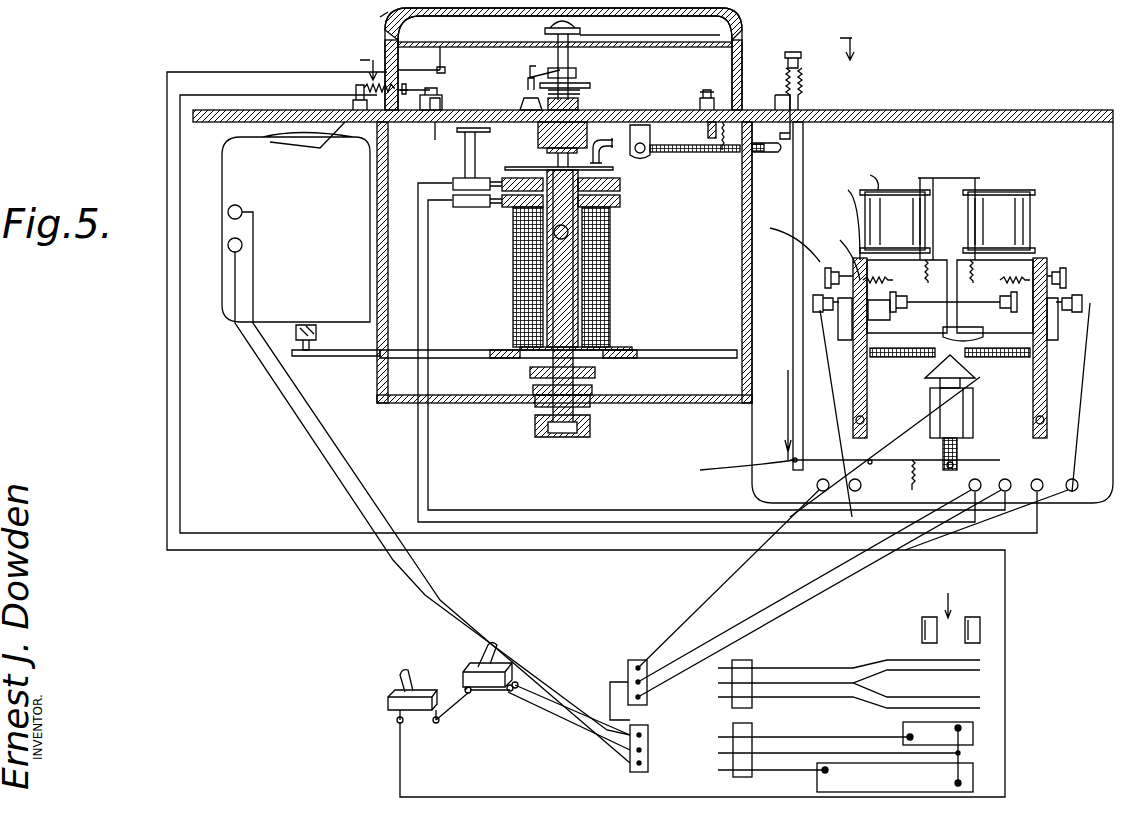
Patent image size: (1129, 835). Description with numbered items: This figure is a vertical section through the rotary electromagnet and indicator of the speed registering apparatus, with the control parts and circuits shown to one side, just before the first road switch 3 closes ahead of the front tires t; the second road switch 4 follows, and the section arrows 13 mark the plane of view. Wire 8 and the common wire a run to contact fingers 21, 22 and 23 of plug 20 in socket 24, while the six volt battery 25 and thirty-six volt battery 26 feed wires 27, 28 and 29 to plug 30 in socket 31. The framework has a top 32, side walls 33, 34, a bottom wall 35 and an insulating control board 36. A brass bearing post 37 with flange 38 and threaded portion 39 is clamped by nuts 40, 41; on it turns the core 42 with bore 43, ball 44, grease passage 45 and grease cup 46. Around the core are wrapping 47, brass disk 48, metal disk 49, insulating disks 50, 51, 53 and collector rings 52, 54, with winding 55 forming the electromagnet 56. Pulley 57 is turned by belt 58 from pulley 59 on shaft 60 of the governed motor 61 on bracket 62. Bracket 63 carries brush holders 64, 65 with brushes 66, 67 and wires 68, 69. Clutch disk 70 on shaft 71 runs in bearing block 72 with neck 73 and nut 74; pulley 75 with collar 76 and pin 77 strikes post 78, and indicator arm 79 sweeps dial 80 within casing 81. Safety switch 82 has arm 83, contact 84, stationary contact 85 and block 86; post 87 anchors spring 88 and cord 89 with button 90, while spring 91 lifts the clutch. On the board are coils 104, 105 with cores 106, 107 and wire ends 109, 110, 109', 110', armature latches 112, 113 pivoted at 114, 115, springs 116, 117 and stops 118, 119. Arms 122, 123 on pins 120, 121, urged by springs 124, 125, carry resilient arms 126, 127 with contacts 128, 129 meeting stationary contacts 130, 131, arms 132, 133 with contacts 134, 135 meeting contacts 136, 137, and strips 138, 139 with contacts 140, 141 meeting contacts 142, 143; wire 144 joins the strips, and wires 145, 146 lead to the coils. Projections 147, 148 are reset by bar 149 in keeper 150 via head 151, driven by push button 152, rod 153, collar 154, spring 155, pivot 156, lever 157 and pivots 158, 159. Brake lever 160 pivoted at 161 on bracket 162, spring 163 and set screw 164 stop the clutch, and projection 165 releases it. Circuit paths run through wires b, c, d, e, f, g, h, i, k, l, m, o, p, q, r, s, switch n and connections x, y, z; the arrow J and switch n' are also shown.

The first road switch 3 is at (990, 665).
The second road switch 4 is at (990, 700).
The wire 8 is at (830, 666).
The section arrow 13 is at (601, 59).
The plug 20 is at (752, 662).
The contact finger 21 is at (640, 666).
The contact finger 22 is at (636, 680).
The contact finger 23 is at (650, 697).
The socket 24 is at (626, 660).
The six volt battery 25 is at (973, 728).
The thirty-six volt battery 26 is at (973, 778).
The wire 27 is at (832, 737).
The common wire 28 is at (785, 752).
The wire 29 is at (780, 775).
The plug 30 is at (742, 777).
The socket 31 is at (648, 768).
The top 32 is at (915, 112).
The side wall 33 is at (742, 262).
The side wall 34 is at (377, 270).
The bottom wall 35 is at (650, 403).
The control board 36 is at (932, 311).
The bearing post 37 is at (582, 320).
The flange 38 is at (595, 372).
The threaded portion 39 is at (530, 372).
The brass nut 40 is at (592, 390).
The brass nut 41 is at (535, 404).
The core 42 is at (547, 280).
The cylindrical bore 43 is at (547, 300).
The anti-friction ball 44 is at (568, 232).
The longitudinal opening 45 is at (582, 280).
The grease cup 46 is at (548, 437).
The insulating wrapping 47 is at (582, 245).
The brass disk 48 is at (620, 184).
The metal disk 49 is at (660, 350).
The insulating disk 50 is at (620, 347).
The insulating disk 51 is at (680, 190).
The brass disk 52 is at (620, 200).
The insulating disk 53 is at (620, 207).
The brass disk 54 is at (612, 222).
The winding wire 55 is at (513, 262).
The electromagnet 56 is at (491, 322).
The grooved pulley 57 is at (443, 372).
The belt 58 is at (352, 370).
The pulley 59 is at (305, 358).
The shaft 60 is at (318, 340).
The electric motor 61 is at (296, 228).
The bracket 62 is at (370, 212).
The insulated bracket 63 is at (465, 160).
The brush holder 64 is at (482, 172).
The brush holder 65 is at (502, 200).
The carbon brush 66 is at (520, 172).
The carbon brush 67 is at (486, 207).
The wire 68 is at (418, 203).
The wire 69 is at (455, 210).
The clutch disk 70 is at (620, 165).
The shaft 71 is at (572, 50).
The bearing block 72 is at (587, 132).
The threaded neck 73 is at (547, 143).
The brass nut 74 is at (580, 104).
The pulley 75 is at (590, 85).
The collar 76 is at (576, 73).
The pin 77 is at (528, 68).
The post 78 is at (522, 78).
The indicator arm 79 is at (675, 35).
The dial 80 is at (486, 42).
The casing 81 is at (742, 45).
The safety switch 82 is at (430, 89).
The arm 83 is at (440, 47).
The contact 84 is at (385, 30).
The stationary contact 85 is at (365, 123).
The insulating block 86 is at (436, 135).
The post 87 is at (355, 95).
The coil spring 88 is at (365, 86).
The cord 89 is at (455, 98).
The button 90 is at (402, 88).
The compression spring 91 is at (580, 92).
The electromagnetic coil 104 is at (873, 172).
The electromagnetic coil 105 is at (1000, 192).
The core 106 is at (895, 221).
The core 107 is at (999, 221).
The wire end 109 is at (831, 217).
The wire end 109' is at (1069, 212).
The wire end 110 is at (906, 200).
The wire end 110' is at (988, 202).
The armature latch 112 is at (848, 194).
The armature latch 113 is at (1030, 210).
The pivot 114 is at (931, 286).
The pivot 115 is at (992, 286).
The pull coil spring 116 is at (960, 195).
The pull coil spring 117 is at (995, 195).
The stop 118 is at (845, 245).
The stop 119 is at (1048, 260).
The pin 120 is at (862, 420).
The pin 121 is at (1042, 424).
The arm 122 is at (853, 370).
The arm 123 is at (1046, 400).
The spring 124 is at (813, 302).
The spring 125 is at (1066, 278).
The resilient arm 126 is at (825, 278).
The resilient arm 127 is at (1060, 260).
The contact member 128 is at (786, 238).
The contact member 129 is at (1062, 270).
The stationary contact 130 is at (825, 276).
The stationary contact 131 is at (1066, 276).
The resilient arm 132 is at (846, 340).
The resilient arm 133 is at (1058, 338).
The contact member 134 is at (840, 322).
The contact member 135 is at (1058, 325).
The stationary contact member 136 is at (838, 305).
The stationary contact member 137 is at (1060, 308).
The resilient strip 138 is at (853, 345).
The resilient strip 139 is at (972, 330).
The movable contact member 140 is at (920, 192).
The movable contact member 141 is at (1082, 302).
The stationary contact 142 is at (907, 296).
The stationary contact 143 is at (1000, 312).
The wire 144 is at (898, 325).
The wire 145 is at (934, 205).
The wire 146 is at (956, 175).
The projection 147 is at (900, 357).
The projection 148 is at (995, 357).
The resetting bar 149 is at (943, 456).
The keeper 150 is at (930, 416).
The head 151 is at (951, 371).
The push button 152 is at (800, 54).
The rod 153 is at (803, 150).
The collar 154 is at (804, 86).
The spring 155 is at (804, 100).
The pivot 156 is at (742, 471).
The lever 157 is at (830, 460).
The pivot 158 is at (870, 462).
The pivot 159 is at (936, 481).
The holding arm 160 is at (648, 150).
The pivot 161 is at (712, 152).
The bracket 162 is at (708, 130).
The tension coil spring 163 is at (770, 159).
The set screw 164 is at (700, 98).
The projection 165 is at (775, 100).
The common wire a is at (852, 682).
The wire b is at (604, 698).
The connection c is at (510, 692).
The connection d is at (469, 694).
The connection e is at (436, 724).
The connection f is at (398, 722).
The wire g is at (1005, 685).
The wire h is at (167, 316).
The wire i is at (268, 533).
The arrow J is at (785, 426).
The wire k is at (708, 592).
The line l is at (345, 470).
The line m is at (280, 398).
The switch n is at (544, 689).
The switch n' is at (396, 688).
The line o is at (548, 710).
The wire p is at (975, 392).
The wire q is at (770, 604).
The wire r is at (418, 482).
The wire s is at (716, 355).
The front tire t is at (1006, 477).
The connection x is at (648, 730).
The connection y is at (648, 748).
The connection z is at (630, 764).